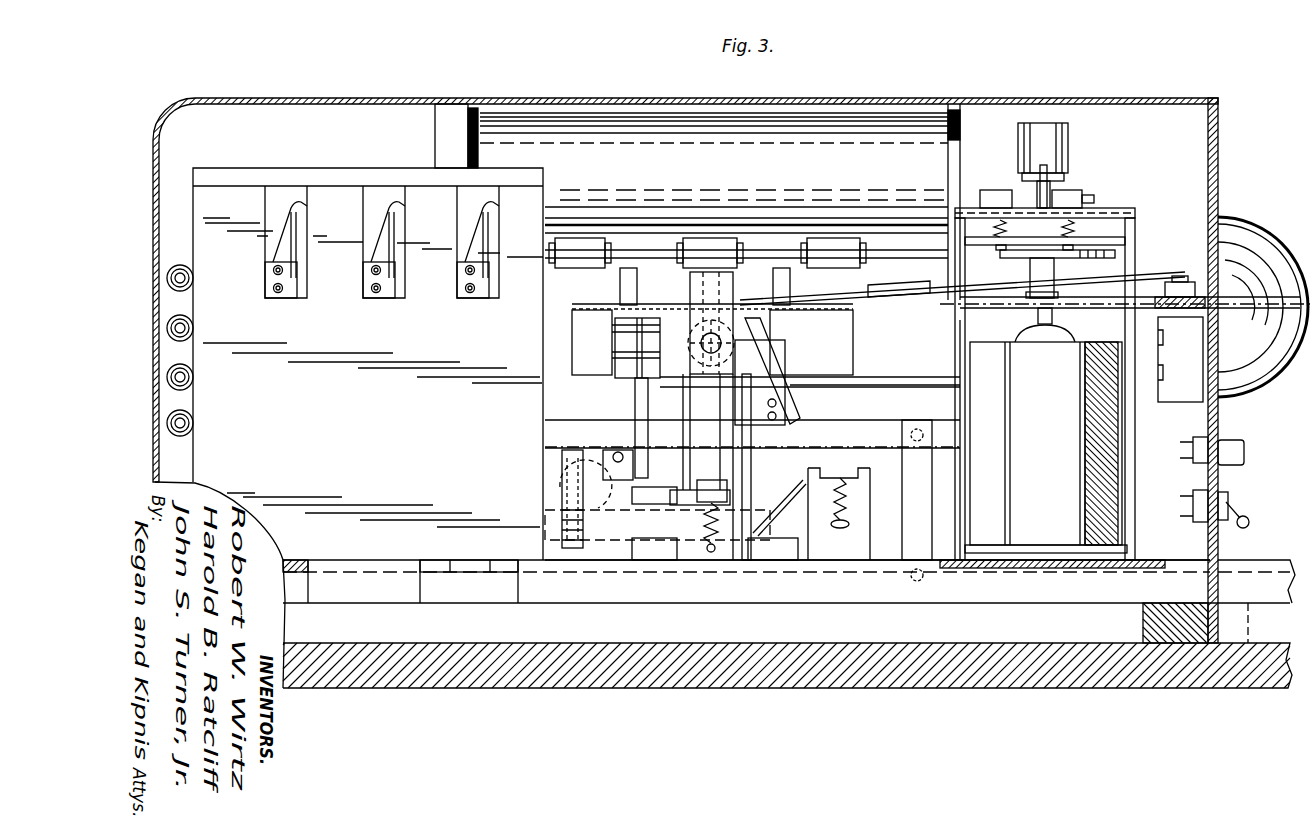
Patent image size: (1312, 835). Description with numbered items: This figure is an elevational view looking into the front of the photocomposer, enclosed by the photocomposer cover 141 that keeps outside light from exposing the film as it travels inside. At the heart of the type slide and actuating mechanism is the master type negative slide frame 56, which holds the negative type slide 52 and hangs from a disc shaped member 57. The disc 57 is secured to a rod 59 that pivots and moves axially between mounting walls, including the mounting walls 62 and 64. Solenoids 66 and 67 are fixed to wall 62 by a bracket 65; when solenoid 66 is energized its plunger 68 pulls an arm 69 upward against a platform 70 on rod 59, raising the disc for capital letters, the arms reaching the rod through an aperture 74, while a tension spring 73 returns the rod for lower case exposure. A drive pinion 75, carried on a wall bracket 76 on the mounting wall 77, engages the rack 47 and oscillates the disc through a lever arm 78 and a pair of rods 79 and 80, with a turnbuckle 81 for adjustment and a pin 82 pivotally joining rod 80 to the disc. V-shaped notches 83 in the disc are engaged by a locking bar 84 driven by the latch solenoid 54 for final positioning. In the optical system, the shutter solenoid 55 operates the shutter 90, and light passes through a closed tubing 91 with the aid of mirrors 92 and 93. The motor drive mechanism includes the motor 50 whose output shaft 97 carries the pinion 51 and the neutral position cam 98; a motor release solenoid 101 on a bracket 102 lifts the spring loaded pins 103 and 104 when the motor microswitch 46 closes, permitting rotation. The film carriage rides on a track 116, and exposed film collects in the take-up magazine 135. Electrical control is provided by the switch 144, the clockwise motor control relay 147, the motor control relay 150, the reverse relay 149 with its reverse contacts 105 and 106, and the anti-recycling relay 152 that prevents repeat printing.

The photocomposer cover 141 is at (346, 99).
The clockwise motor control relay 147 is at (268, 270).
The motor control relay 150 is at (368, 268).
The anti-recycling relay 152 is at (462, 272).
The film take-up magazine 135 is at (765, 147).
The motor release solenoid 101 is at (1045, 135).
The bracket 102 is at (1065, 180).
The reverse contact 105 is at (1000, 192).
The reverse contact 106 is at (1088, 196).
The neutral position cam 98 is at (1116, 253).
The spring loaded pin 103 is at (996, 260).
The spring loaded pin 104 is at (1086, 260).
The rod 79 is at (1180, 281).
The lever arm 78 is at (1200, 288).
The V-shaped notches 83 is at (606, 305).
The locking bar 84 is at (690, 279).
The bracket 65 is at (650, 440).
The pin 82 is at (735, 292).
The rod 80 is at (812, 298).
The turnbuckle 81 is at (900, 298).
The mirror 93 is at (712, 341).
The disc shaped member 57 is at (855, 316).
The pinion 51 is at (1030, 310).
The motor output shaft 97 is at (1056, 318).
The motor microswitch 46 is at (962, 320).
The master type negative slide frame 56 is at (855, 362).
The solenoid 67 is at (636, 341).
The solenoid 66 is at (637, 351).
The latch solenoid 54 is at (698, 366).
The negative type slide 52 is at (832, 388).
The track 116 is at (890, 428).
The motor 50 is at (1058, 404).
The rack 47 is at (1099, 351).
The drive pinion 75 is at (1180, 359).
The wall bracket 76 is at (1200, 356).
The mounting wall 77 is at (1135, 428).
The plunger 68 is at (626, 444).
The rod 59 is at (706, 432).
The arm 69 is at (716, 488).
The shutter 90 is at (560, 497).
The shutter solenoid 55 is at (545, 540).
The aperture 74 is at (654, 505).
The platform 70 is at (779, 508).
The mirror 92 is at (808, 522).
The closed tubing 91 is at (622, 522).
The mounting wall 62 is at (672, 540).
The tension spring 73 is at (716, 518).
The mounting wall 64 is at (745, 540).
The reverse relay 149 is at (858, 542).
The switch 144 is at (1238, 512).